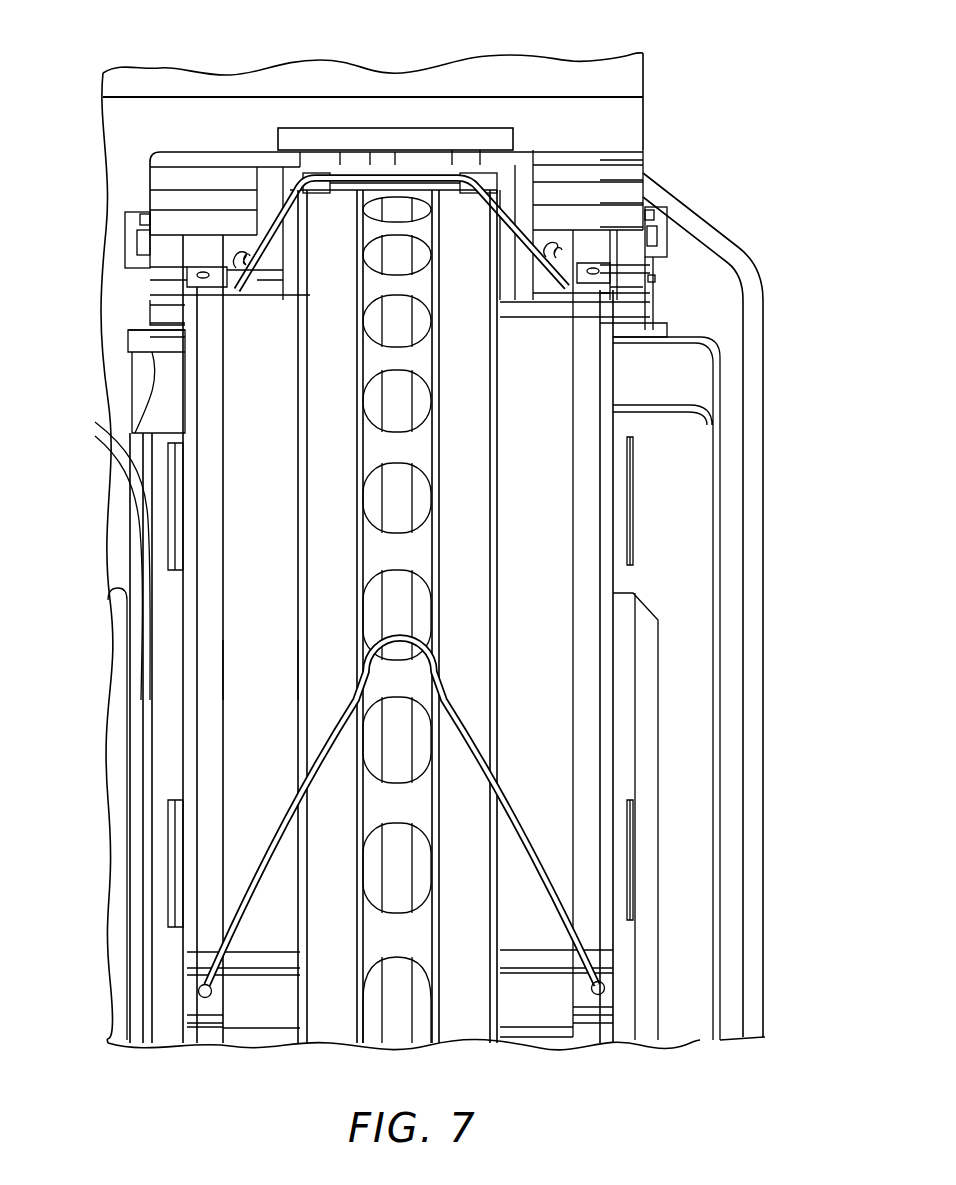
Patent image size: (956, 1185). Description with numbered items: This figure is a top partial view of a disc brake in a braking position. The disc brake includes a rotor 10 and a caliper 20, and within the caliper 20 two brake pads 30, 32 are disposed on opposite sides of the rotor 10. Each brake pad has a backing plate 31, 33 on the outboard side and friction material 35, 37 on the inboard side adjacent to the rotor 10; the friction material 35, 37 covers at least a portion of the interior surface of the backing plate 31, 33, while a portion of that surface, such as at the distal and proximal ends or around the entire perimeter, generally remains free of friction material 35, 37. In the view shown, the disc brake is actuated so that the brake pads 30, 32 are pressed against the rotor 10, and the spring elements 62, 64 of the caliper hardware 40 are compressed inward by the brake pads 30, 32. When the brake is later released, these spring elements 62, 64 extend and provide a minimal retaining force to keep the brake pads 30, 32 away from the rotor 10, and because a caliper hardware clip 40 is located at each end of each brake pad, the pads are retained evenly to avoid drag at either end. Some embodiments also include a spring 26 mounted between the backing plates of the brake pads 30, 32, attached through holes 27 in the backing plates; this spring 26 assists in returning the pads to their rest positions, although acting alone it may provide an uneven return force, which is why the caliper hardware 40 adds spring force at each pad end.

The rotor 10 is at (462, 1000).
The caliper 20 is at (755, 318).
The spring 26 is at (268, 822).
The holes 27 is at (198, 992).
The brake pad 30 is at (170, 405).
The backing plate 31 is at (213, 503).
The brake pad 32 is at (622, 578).
The backing plate 33 is at (583, 536).
The friction material 35 is at (253, 662).
The friction material 37 is at (533, 486).
The caliper hardware 40 is at (367, 160).
The spring element 62 is at (234, 268).
The spring element 64 is at (551, 248).